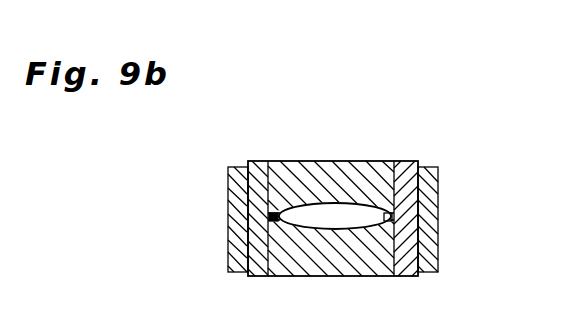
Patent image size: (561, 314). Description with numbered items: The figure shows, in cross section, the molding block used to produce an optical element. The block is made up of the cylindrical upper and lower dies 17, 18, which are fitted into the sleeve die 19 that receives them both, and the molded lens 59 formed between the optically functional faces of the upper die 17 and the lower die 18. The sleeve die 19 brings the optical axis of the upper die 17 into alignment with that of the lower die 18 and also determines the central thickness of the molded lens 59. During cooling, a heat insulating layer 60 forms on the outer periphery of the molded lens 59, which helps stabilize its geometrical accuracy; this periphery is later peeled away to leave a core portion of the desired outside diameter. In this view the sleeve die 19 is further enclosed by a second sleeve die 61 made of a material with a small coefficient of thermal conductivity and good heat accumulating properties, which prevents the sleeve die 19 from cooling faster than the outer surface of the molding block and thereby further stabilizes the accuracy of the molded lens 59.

The upper die 17 is at (397, 165).
The lower die 18 is at (376, 261).
The sleeve die 19 is at (260, 260).
The molded lens 59 is at (376, 210).
The heat insulating layer 60 is at (272, 219).
The second sleeve die 61 is at (438, 202).